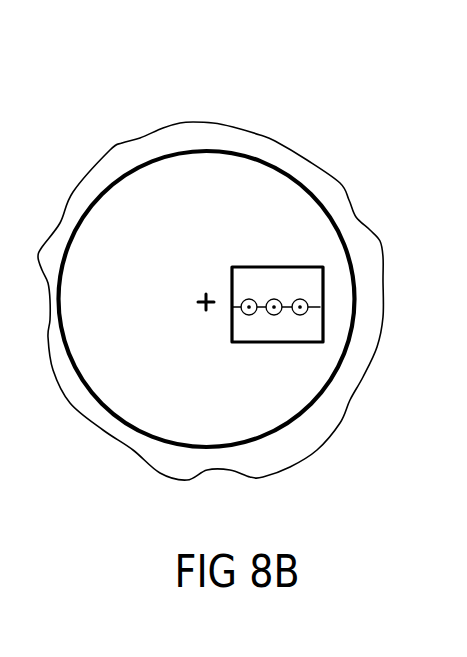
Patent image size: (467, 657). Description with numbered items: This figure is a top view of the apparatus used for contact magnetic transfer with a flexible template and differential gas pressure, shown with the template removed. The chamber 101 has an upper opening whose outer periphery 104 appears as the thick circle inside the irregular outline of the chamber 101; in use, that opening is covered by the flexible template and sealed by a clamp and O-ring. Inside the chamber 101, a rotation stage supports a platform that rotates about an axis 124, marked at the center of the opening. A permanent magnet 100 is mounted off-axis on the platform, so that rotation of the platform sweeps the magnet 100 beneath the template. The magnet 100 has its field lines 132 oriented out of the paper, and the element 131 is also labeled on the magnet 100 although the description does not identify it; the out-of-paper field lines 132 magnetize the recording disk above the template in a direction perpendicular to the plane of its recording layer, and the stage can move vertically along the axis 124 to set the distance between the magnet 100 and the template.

The permanent magnet 100 is at (275, 330).
The chamber 101 is at (86, 195).
The outer periphery 104 is at (132, 173).
The axis 124 is at (200, 306).
The left lead line 131 is at (233, 307).
The field lines 132 is at (320, 313).